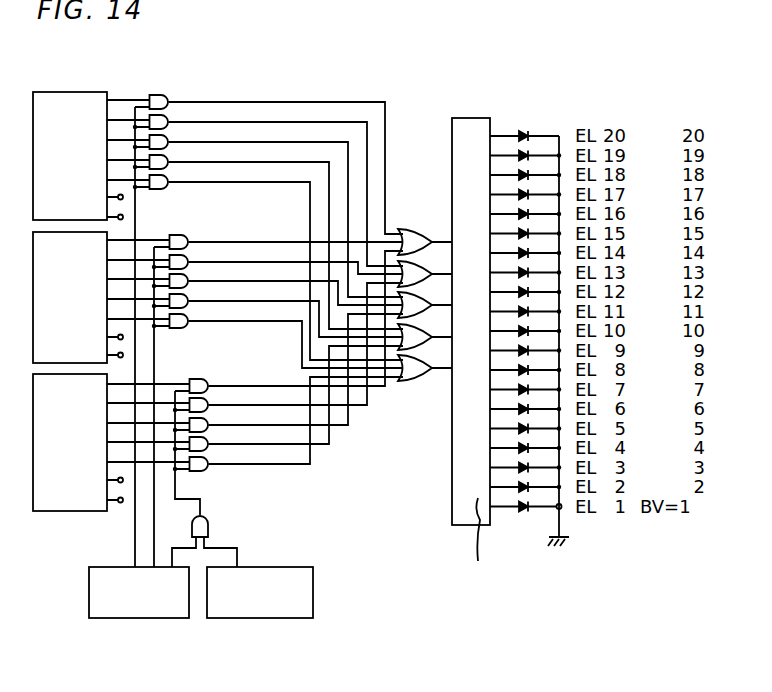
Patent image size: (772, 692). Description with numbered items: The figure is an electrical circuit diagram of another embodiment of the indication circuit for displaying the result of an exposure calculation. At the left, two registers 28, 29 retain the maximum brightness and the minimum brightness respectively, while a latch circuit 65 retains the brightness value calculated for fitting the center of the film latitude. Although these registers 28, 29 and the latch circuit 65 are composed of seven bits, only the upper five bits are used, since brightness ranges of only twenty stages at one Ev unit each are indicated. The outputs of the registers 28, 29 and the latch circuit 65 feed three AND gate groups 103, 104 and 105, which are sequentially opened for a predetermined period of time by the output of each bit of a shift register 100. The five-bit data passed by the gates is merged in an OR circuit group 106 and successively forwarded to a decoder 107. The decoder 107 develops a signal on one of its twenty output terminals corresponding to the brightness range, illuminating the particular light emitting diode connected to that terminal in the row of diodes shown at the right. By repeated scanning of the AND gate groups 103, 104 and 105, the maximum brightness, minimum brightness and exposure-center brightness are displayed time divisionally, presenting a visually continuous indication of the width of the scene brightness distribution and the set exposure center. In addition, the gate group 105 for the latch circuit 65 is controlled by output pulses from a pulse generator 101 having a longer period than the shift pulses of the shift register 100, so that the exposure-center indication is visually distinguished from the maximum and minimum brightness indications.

The register 28 is at (72, 93).
The register 29 is at (92, 353).
The latch circuit 65 is at (53, 503).
The shift register 100 is at (118, 619).
The pulse generator 101 is at (252, 619).
The AND gate group 103 is at (172, 102).
The AND gate group 104 is at (192, 242).
The AND gate group 105 is at (212, 386).
The OR circuit group 106 is at (433, 242).
The decoder 107 is at (471, 117).